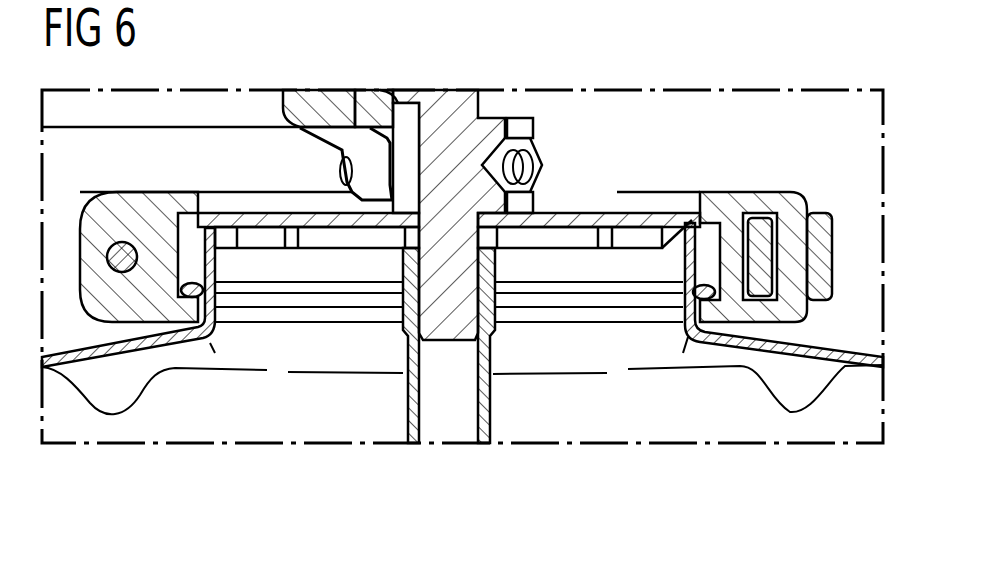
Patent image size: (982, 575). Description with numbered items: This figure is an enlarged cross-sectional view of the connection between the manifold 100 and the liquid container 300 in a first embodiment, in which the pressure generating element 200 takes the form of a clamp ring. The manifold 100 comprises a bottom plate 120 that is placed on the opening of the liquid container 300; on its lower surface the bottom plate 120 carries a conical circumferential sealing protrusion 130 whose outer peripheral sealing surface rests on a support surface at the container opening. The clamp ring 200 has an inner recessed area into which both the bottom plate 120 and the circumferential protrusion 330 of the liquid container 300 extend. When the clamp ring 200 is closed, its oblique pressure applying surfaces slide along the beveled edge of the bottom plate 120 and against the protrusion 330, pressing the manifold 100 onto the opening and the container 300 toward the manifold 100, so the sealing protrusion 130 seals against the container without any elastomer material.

The manifold 100 is at (613, 213).
The bottom plate 120 is at (675, 218).
The circumferential sealing protrusion 130 is at (227, 233).
The pressure generating element 200 is at (752, 203).
The liquid container 300 is at (808, 357).
The circumferential protrusion 330 is at (691, 299).